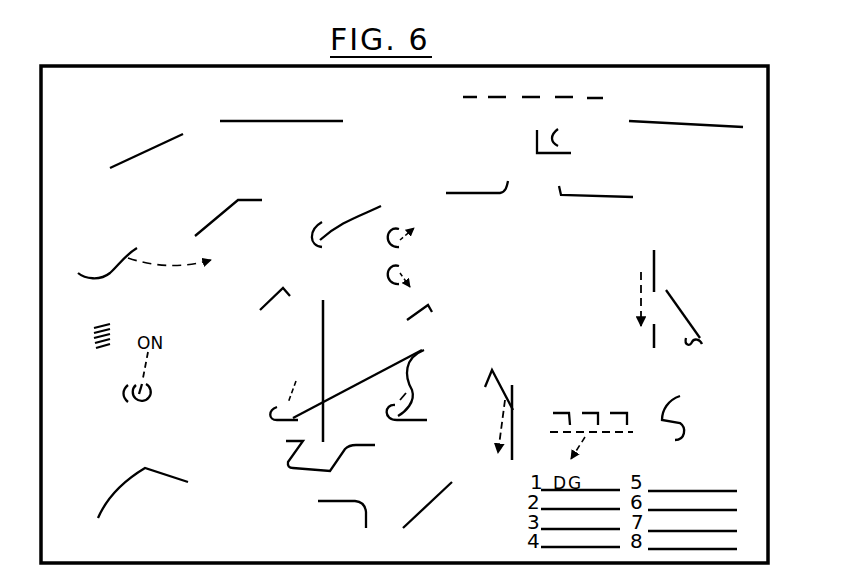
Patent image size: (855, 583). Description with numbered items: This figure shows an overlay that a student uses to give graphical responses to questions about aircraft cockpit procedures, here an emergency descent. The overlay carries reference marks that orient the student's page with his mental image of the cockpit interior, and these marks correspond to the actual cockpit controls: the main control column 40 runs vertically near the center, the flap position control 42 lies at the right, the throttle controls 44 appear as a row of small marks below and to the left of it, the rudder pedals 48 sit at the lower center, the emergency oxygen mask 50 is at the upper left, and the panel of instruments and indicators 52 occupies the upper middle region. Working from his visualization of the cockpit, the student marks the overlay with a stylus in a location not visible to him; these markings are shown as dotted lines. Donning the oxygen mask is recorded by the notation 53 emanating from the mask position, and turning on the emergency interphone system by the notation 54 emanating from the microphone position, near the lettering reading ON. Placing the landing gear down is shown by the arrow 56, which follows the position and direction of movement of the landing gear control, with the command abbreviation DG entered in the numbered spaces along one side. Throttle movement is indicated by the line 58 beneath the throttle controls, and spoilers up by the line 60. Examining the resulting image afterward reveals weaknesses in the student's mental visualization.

The main control column 40 is at (323, 362).
The flap position control 42 is at (680, 396).
The throttle controls 44 is at (588, 412).
The rudder pedals 48 is at (378, 378).
The emergency oxygen mask 50 is at (115, 264).
The panel of instruments and indicators 52 is at (386, 233).
The notation for donning the oxygen mask 53 is at (153, 278).
The notation for turning on the emergency interphone system 54 is at (160, 362).
The arrow for placing landing gear down 56 is at (628, 290).
The throttle movement line 58 is at (592, 441).
The spoilers up line 60 is at (507, 400).